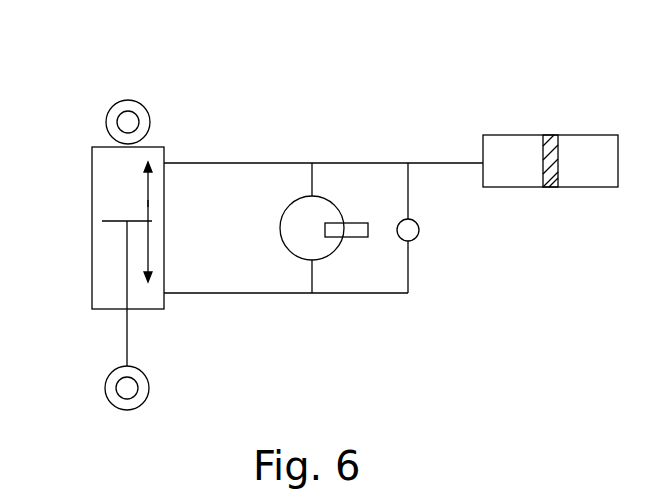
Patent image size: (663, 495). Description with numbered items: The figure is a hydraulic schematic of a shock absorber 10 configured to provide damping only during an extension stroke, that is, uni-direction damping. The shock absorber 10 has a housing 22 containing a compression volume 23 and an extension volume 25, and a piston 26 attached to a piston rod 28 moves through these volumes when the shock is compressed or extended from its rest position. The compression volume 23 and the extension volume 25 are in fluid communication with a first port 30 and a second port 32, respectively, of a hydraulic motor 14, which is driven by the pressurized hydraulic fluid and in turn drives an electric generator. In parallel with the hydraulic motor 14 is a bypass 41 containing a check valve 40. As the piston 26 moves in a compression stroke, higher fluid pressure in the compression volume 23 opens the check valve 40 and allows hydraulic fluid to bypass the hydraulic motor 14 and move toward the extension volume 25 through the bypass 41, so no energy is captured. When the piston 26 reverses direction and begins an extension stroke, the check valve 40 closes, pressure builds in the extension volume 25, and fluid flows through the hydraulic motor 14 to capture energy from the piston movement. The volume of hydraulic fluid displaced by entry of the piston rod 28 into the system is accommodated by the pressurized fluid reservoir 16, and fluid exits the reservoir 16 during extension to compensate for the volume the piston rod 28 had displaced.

The shock absorber 10 is at (91, 86).
The hydraulic motor 14 is at (304, 196).
The pressurized fluid reservoir 16 is at (519, 140).
The housing 22 is at (92, 158).
The compression volume 23 is at (139, 181).
The extension volume 25 is at (152, 299).
The piston 26 is at (106, 221).
The piston rod 28 is at (124, 254).
The first port 30 is at (315, 192).
The second port 32 is at (315, 265).
The check valve 40 is at (419, 219).
The bypass 41 is at (412, 265).